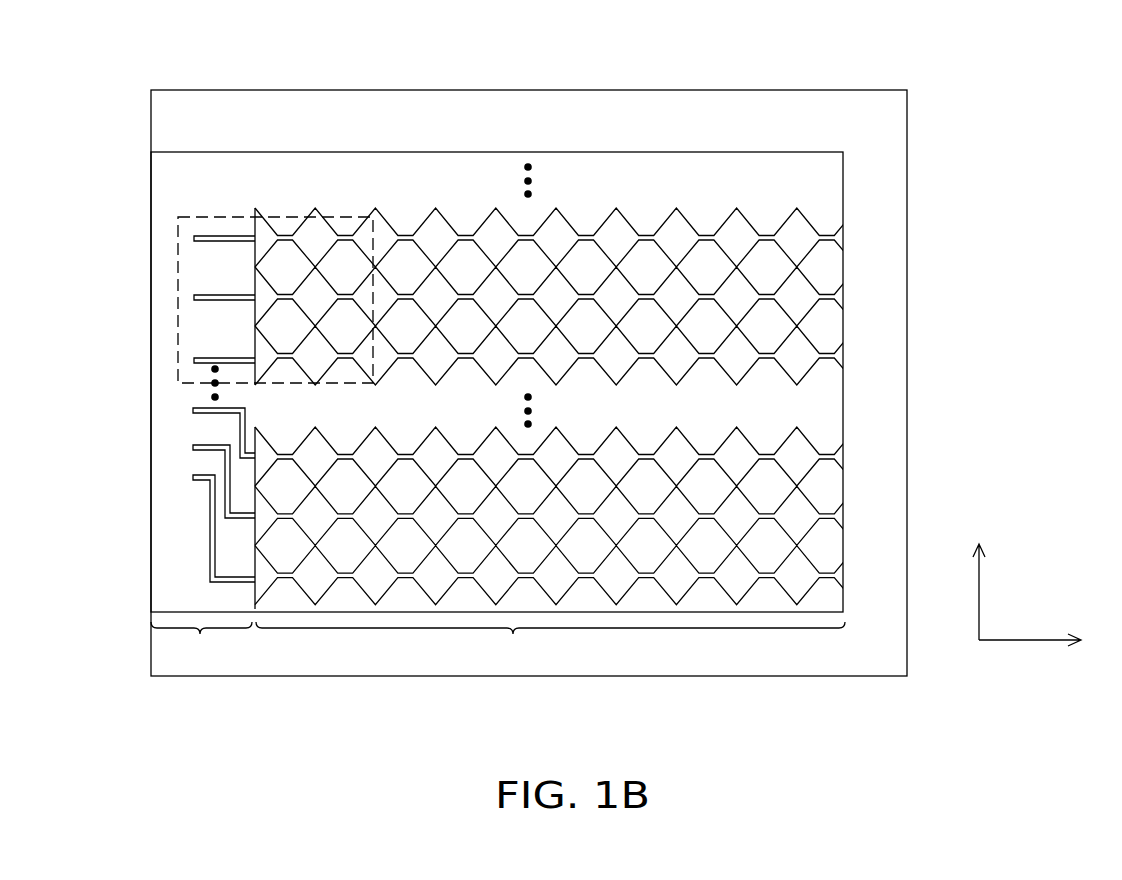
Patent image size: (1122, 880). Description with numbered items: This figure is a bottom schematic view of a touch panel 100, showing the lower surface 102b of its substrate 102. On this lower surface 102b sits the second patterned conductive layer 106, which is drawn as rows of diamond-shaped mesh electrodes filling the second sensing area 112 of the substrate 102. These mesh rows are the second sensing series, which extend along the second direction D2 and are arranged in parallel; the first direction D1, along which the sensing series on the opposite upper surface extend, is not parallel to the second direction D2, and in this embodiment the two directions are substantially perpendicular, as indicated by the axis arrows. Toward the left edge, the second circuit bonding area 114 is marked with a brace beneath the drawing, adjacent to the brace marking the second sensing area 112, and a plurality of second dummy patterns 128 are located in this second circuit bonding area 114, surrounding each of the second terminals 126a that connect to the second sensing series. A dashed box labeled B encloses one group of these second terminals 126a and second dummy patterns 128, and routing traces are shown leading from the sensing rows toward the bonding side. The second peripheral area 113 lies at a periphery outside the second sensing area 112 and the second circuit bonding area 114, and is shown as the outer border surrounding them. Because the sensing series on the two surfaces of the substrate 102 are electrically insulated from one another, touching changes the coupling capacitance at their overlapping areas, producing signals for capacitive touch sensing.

The touch panel 100 is at (1053, 744).
The substrate 102 is at (478, 383).
The second patterned conductive layer 106 is at (150, 562).
The lower surface 102b is at (175, 423).
The second sensing area 112 is at (513, 634).
The second peripheral area 113 is at (787, 663).
The second circuit bonding area 114 is at (200, 634).
The second terminal 126a is at (235, 237).
The second dummy pattern 128 is at (233, 200).
The region B is at (178, 287).
The first direction D1 is at (984, 575).
The second direction D2 is at (1046, 642).